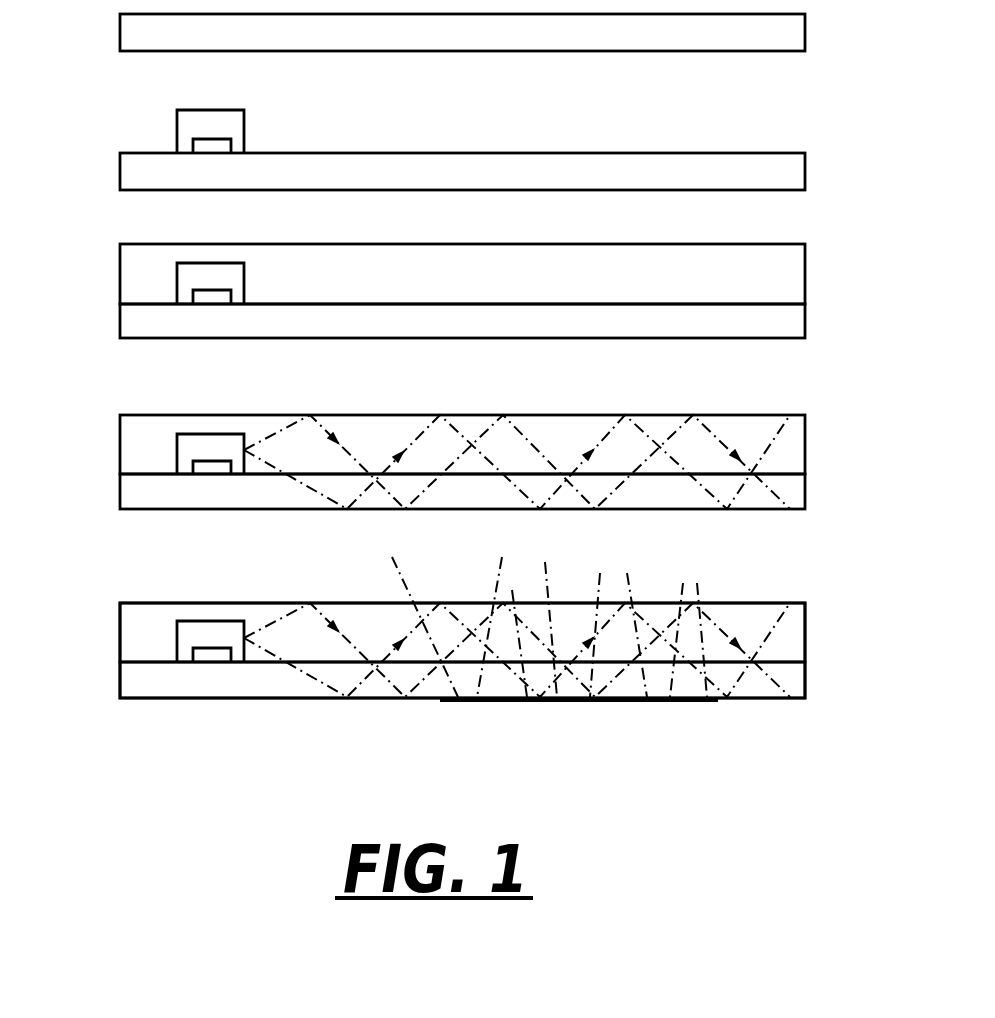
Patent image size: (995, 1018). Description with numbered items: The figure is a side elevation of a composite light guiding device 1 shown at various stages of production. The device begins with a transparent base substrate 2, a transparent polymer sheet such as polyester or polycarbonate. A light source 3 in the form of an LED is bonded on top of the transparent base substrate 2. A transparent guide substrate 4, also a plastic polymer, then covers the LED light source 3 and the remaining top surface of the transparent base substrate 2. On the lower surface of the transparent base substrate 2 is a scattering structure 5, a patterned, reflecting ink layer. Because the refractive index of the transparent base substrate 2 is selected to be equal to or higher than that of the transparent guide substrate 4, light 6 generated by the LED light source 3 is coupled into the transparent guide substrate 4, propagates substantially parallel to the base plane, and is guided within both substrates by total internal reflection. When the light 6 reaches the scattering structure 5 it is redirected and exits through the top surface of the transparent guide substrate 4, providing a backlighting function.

The composite light guiding device 1 is at (797, 581).
The transparent base substrate 2 is at (138, 31).
The light source 3 is at (185, 126).
The transparent guide substrate 4 is at (137, 255).
The scattering structure 5 is at (620, 703).
The light 6 is at (278, 433).